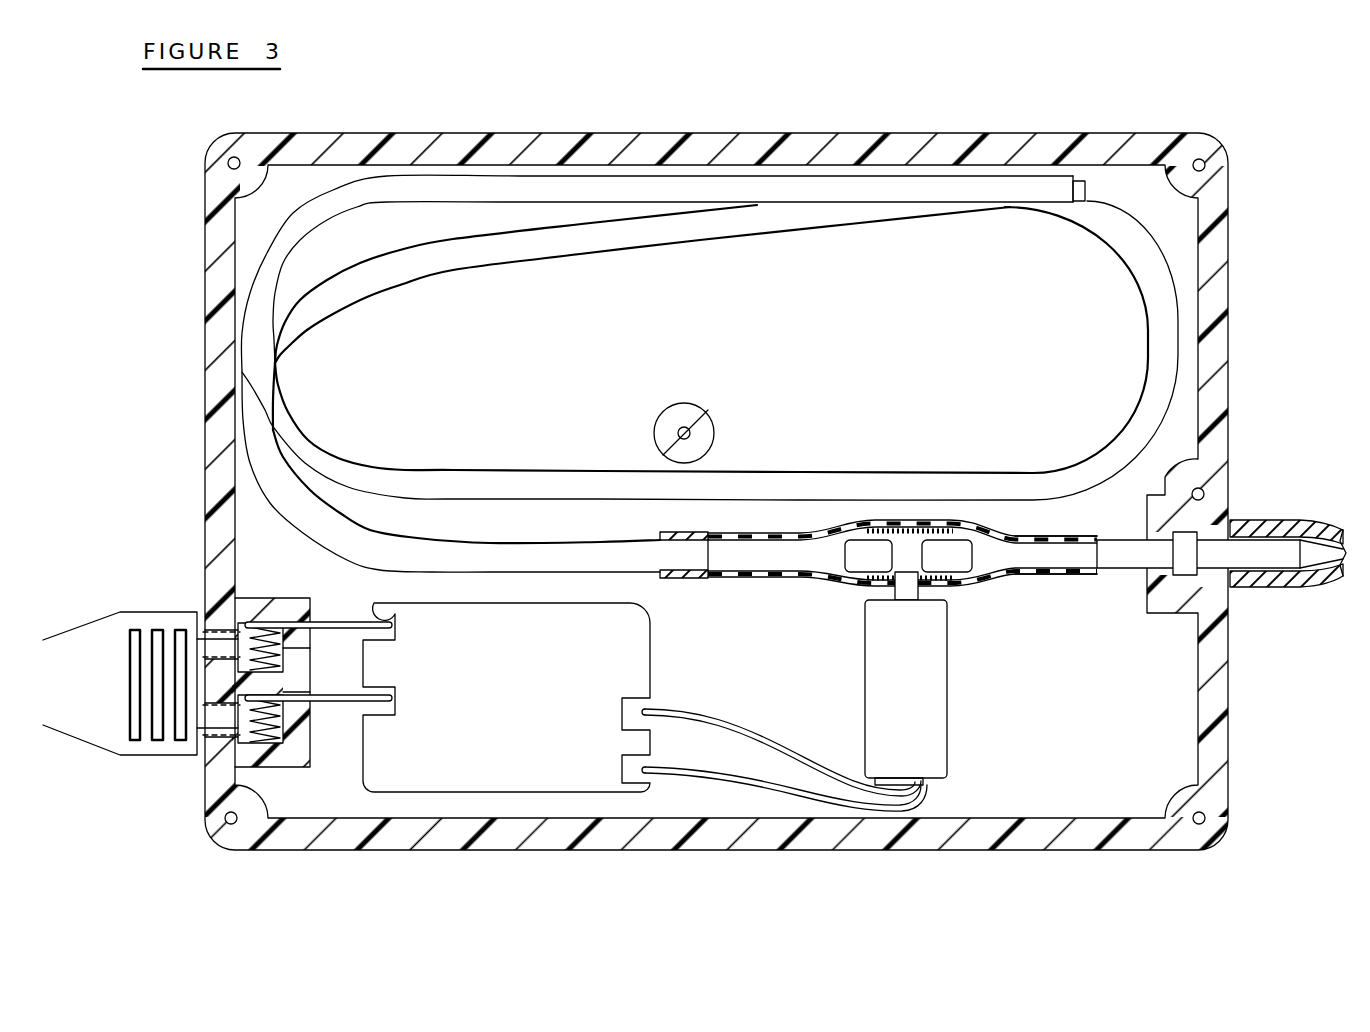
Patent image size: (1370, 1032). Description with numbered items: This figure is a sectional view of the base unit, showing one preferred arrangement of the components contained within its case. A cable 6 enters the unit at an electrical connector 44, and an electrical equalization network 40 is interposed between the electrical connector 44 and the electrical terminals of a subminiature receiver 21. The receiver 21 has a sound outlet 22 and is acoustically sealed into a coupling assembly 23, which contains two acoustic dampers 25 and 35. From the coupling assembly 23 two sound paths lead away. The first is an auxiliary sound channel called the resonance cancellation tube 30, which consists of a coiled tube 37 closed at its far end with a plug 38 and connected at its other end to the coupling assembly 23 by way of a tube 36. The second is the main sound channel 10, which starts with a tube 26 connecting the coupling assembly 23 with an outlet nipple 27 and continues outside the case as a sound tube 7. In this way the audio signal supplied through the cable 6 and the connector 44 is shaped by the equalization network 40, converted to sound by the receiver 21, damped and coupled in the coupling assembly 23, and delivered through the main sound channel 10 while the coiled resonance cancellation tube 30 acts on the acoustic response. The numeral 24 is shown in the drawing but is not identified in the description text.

The cable 6 is at (181, 607).
The sound tube 7 is at (1322, 593).
The main sound channel 10 is at (1233, 598).
The subminiature receiver 21 is at (957, 697).
The sound outlet 22 is at (905, 589).
The coupling assembly 23 is at (862, 590).
The lower tube wall section 24 is at (951, 592).
The acoustic damper 25 is at (950, 551).
The tube 26 is at (1036, 581).
The outlet nipple 27 is at (1213, 553).
The resonance cancellation tube 30 is at (641, 577).
The acoustic damper 35 is at (865, 551).
The tube 36 is at (755, 580).
The coiled tube 37 is at (468, 558).
The plug 38 is at (1092, 192).
The electrical equalization network 40 is at (654, 668).
The electrical connector 44 is at (288, 769).